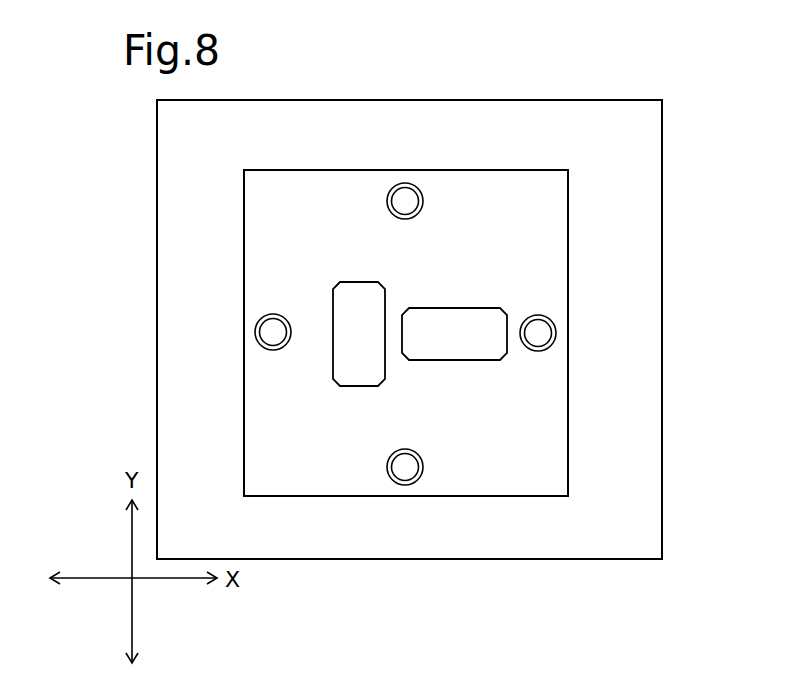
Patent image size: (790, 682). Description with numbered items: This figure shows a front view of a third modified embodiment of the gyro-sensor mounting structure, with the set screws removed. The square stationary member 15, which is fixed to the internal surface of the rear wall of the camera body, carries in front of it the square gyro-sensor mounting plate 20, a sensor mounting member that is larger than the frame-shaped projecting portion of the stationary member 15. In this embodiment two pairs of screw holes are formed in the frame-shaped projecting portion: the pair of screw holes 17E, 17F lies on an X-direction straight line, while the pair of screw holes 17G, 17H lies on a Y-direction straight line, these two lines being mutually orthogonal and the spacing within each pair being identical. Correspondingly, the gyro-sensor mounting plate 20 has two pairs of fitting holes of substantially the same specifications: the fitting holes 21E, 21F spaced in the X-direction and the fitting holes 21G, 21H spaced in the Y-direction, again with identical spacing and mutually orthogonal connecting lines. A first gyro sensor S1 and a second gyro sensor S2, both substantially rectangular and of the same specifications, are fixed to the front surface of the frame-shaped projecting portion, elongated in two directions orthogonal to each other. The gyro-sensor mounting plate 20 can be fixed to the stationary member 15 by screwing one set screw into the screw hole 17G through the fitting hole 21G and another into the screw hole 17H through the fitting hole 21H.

The stationary member 15 is at (652, 240).
The gyro-sensor mounting plate 20 is at (562, 267).
The fitting hole 21G is at (389, 193).
The screw hole 17G is at (420, 199).
The fitting hole 21F is at (260, 347).
The screw hole 17F is at (261, 329).
The fitting hole 21E is at (553, 346).
The screw hole 17E is at (553, 331).
The fitting hole 21H is at (396, 485).
The screw hole 17H is at (392, 470).
The first gyro sensor S1 is at (458, 320).
The second gyro sensor S2 is at (357, 353).